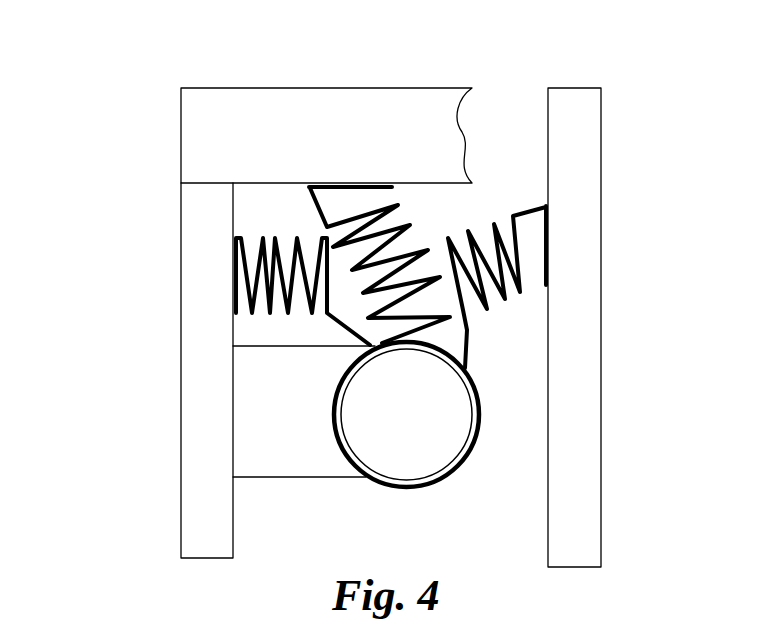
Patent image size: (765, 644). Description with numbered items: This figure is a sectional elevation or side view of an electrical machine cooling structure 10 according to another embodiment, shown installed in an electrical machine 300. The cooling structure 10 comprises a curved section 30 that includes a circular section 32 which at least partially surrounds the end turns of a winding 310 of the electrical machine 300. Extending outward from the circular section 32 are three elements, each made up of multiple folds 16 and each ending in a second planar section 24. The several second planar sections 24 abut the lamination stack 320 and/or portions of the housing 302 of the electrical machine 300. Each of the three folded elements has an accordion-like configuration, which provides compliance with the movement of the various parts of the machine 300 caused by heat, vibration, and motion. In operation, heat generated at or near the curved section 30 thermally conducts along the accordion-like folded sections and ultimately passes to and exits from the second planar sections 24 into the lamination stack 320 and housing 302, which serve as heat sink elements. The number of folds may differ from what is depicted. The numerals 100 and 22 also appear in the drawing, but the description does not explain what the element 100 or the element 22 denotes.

The electrical machine 300 is at (140, 98).
The device 100 is at (127, 138).
The housing 302 is at (257, 103).
The lamination stack 320 is at (192, 408).
The winding 310 is at (264, 387).
The second planar section 24 is at (387, 184).
The folds 16 is at (297, 237).
The cooling structure 10 is at (487, 190).
The ball 22 is at (367, 438).
The curved section 30 is at (385, 488).
The circular section 32 is at (463, 408).